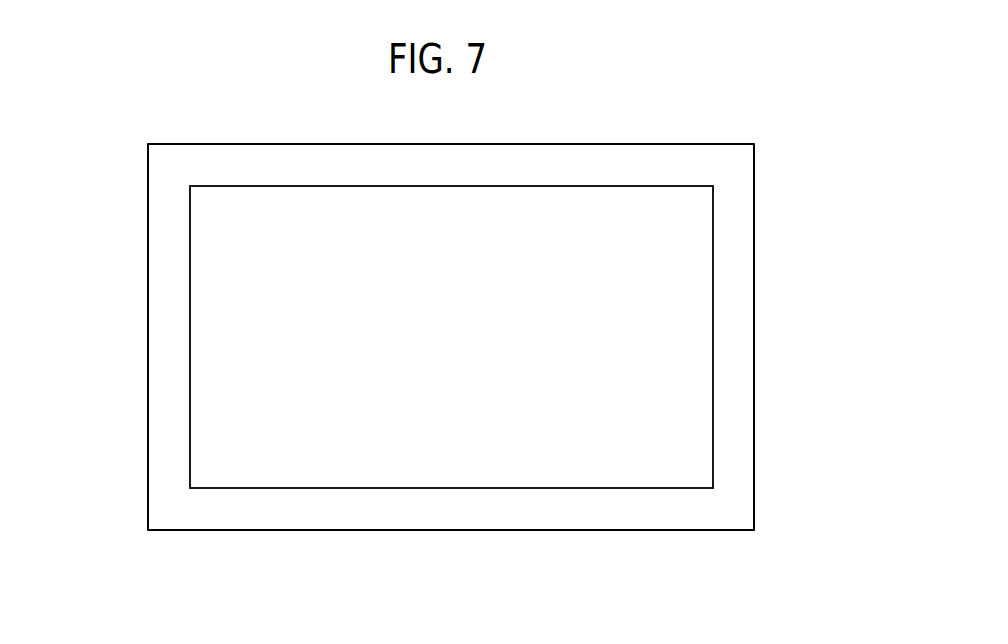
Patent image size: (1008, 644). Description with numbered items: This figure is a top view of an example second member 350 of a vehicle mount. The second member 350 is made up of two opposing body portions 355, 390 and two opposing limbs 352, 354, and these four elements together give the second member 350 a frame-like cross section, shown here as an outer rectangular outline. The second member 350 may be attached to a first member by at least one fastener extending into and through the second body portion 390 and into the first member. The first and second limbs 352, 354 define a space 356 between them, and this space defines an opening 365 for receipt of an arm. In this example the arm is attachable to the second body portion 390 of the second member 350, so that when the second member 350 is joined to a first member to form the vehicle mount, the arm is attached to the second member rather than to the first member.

The second member 350 is at (736, 165).
The first limb 352 is at (173, 360).
The second limb 354 is at (735, 367).
The first body portion 355 is at (410, 165).
The space 356 is at (318, 282).
The opening 365 is at (462, 350).
The second body portion 390 is at (470, 510).